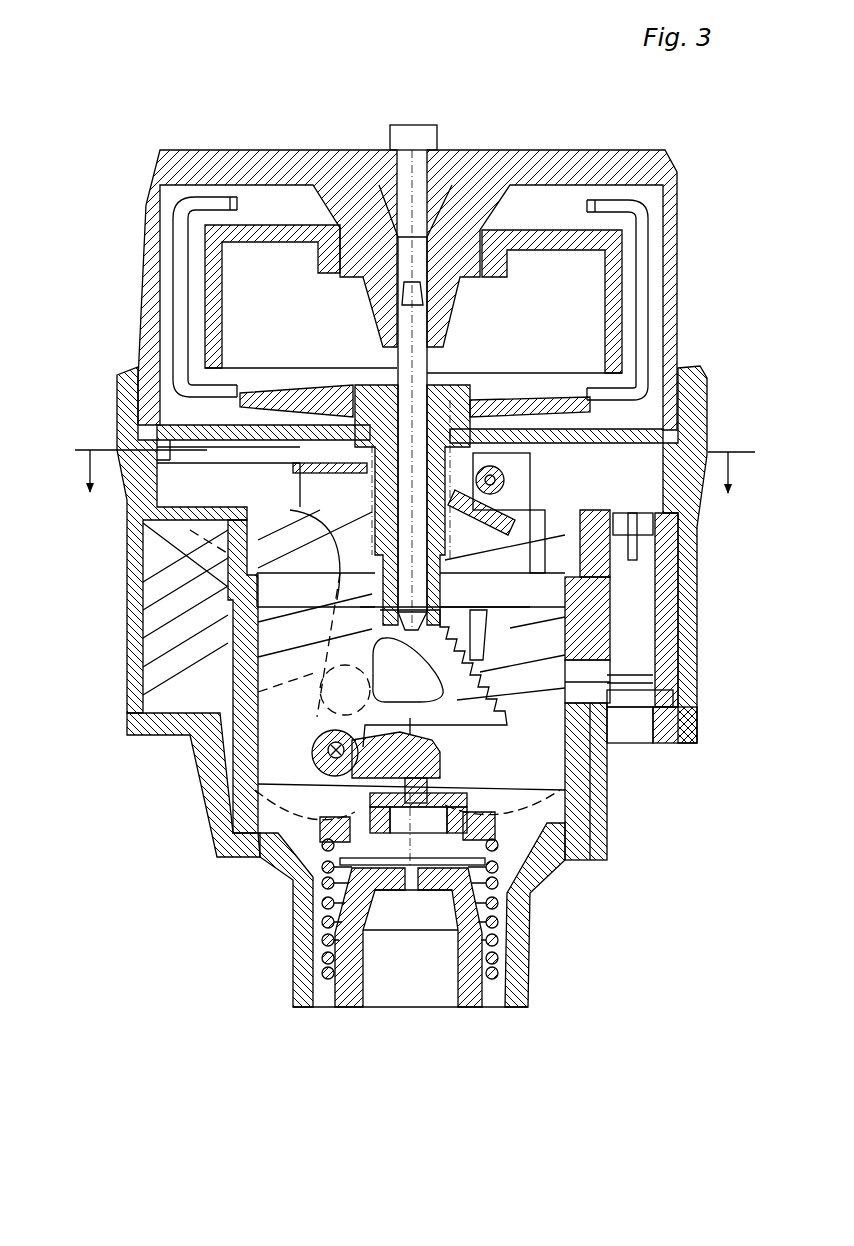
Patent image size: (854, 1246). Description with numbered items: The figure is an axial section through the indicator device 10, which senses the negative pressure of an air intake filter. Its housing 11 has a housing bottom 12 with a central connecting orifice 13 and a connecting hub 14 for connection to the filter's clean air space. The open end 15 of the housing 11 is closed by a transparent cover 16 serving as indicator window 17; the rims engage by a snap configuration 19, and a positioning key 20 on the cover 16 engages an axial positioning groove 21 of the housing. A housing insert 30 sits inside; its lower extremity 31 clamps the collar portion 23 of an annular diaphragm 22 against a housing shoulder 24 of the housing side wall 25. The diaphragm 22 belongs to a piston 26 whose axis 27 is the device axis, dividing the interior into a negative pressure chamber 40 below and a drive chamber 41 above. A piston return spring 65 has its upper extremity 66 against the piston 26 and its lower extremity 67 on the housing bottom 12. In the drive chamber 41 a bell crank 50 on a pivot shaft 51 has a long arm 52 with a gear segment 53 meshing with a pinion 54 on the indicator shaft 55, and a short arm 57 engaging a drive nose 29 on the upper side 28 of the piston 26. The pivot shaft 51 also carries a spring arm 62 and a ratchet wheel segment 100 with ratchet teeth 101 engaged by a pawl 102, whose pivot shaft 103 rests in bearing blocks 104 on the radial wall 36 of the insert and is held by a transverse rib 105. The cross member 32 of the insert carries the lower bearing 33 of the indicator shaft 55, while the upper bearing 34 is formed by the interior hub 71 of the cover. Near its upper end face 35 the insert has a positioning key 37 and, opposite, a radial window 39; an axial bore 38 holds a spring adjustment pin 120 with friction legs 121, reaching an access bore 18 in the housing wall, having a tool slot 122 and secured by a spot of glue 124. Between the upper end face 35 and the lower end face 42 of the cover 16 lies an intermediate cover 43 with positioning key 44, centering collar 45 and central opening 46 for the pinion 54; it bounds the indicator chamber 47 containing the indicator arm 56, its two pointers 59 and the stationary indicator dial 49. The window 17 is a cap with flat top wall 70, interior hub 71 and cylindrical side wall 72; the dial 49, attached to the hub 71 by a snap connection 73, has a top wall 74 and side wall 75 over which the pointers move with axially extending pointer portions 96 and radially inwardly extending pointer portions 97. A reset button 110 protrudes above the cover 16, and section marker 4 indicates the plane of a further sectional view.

The indicator device 10 is at (208, 148).
The housing 11 is at (198, 805).
The housing bottom 12 is at (287, 880).
The connecting orifice 13 is at (432, 835).
The connecting hub 14 is at (478, 1010).
The open end 15 is at (692, 375).
The cover 16 is at (490, 148).
The indicator window 17 is at (175, 150).
The access bore 18 is at (653, 743).
The snap configuration 19 is at (700, 382).
The positioning key 20 is at (130, 375).
The positioning groove 21 is at (140, 530).
The annular diaphragm 22 is at (300, 813).
The collar portion 23 is at (250, 838).
The housing shoulder 24 is at (268, 853).
The housing side wall 25 is at (745, 721).
The piston 26 is at (287, 880).
The axis 27 is at (418, 880).
The upper side 28 is at (195, 812).
The drive nose 29 is at (537, 847).
The housing insert 30 is at (190, 737).
The lower extremity 31 is at (228, 835).
The cross member 32 is at (340, 640).
The lower bearing 33 is at (240, 660).
The upper bearing 34 is at (395, 318).
The upper end face 35 is at (685, 432).
The radial wall 36 is at (185, 518).
The positioning key 37 is at (200, 470).
The axial bore 38 is at (610, 572).
The radial window 39 is at (610, 676).
The negative pressure chamber 40 is at (527, 887).
The drive chamber 41 is at (600, 820).
The lower end face 42 is at (709, 398).
The intermediate cover 43 is at (705, 415).
The positioning key 44 is at (170, 413).
The centering collar 45 is at (147, 478).
The central opening 46 is at (330, 548).
The indicator chamber 47 is at (553, 200).
The indicator dial 49 is at (258, 222).
The bell crank 50 is at (307, 750).
The pivot shaft 51 is at (313, 758).
The long arm 52 is at (228, 688).
The gear segment 53 is at (360, 597).
The pinion 54 is at (380, 612).
The indicator shaft 55 is at (388, 330).
The indicator arm 56 is at (300, 410).
The short arm 57 is at (395, 870).
The pointers 59 is at (180, 215).
The spring arm 62 is at (140, 745).
The piston return spring 65 is at (497, 958).
The upper extremity 66 is at (510, 870).
The lower extremity 67 is at (520, 1003).
The top wall 70 is at (524, 160).
The interior hub 71 is at (470, 218).
The side wall 72 is at (600, 245).
The snap connection 73 is at (330, 215).
The top wall 74 is at (300, 225).
The side wall 75 is at (245, 245).
The axially extending pointer portions 96 is at (210, 300).
The radially inwardly extending pointer portions 97 is at (212, 205).
The ratchet wheel segment 100 is at (655, 690).
The ratchet teeth 101 is at (470, 690).
The pawl 102 is at (580, 625).
The pivot shaft 103 is at (490, 470).
The bearing blocks 104 is at (486, 488).
The transverse rib 105 is at (495, 455).
The reset button 110 is at (415, 125).
The spring adjustment pin 120 is at (633, 590).
The friction legs 121 is at (640, 527).
The tool slot 122 is at (630, 717).
The spot of glue 124 is at (622, 747).
The section line 4 is at (408, 472).